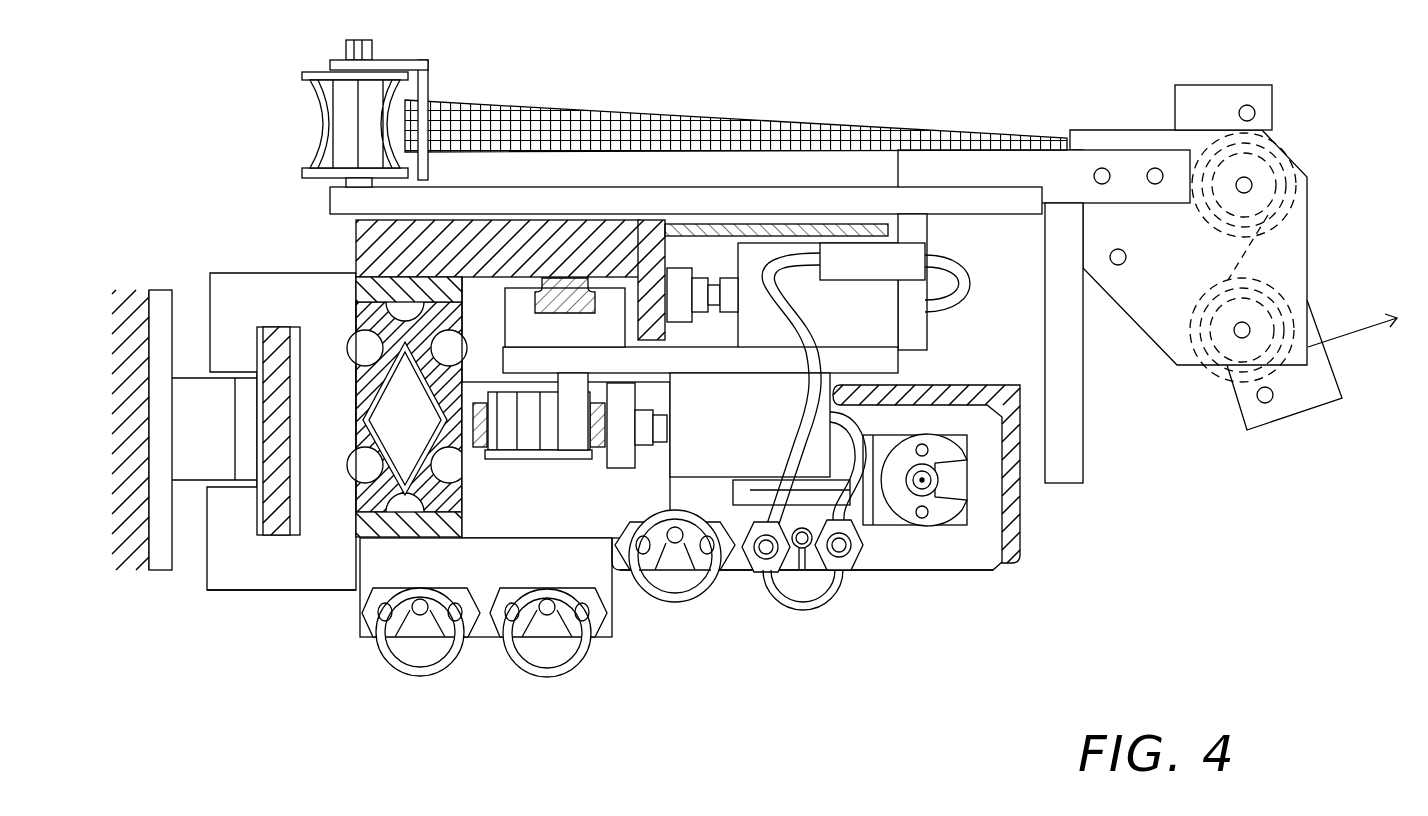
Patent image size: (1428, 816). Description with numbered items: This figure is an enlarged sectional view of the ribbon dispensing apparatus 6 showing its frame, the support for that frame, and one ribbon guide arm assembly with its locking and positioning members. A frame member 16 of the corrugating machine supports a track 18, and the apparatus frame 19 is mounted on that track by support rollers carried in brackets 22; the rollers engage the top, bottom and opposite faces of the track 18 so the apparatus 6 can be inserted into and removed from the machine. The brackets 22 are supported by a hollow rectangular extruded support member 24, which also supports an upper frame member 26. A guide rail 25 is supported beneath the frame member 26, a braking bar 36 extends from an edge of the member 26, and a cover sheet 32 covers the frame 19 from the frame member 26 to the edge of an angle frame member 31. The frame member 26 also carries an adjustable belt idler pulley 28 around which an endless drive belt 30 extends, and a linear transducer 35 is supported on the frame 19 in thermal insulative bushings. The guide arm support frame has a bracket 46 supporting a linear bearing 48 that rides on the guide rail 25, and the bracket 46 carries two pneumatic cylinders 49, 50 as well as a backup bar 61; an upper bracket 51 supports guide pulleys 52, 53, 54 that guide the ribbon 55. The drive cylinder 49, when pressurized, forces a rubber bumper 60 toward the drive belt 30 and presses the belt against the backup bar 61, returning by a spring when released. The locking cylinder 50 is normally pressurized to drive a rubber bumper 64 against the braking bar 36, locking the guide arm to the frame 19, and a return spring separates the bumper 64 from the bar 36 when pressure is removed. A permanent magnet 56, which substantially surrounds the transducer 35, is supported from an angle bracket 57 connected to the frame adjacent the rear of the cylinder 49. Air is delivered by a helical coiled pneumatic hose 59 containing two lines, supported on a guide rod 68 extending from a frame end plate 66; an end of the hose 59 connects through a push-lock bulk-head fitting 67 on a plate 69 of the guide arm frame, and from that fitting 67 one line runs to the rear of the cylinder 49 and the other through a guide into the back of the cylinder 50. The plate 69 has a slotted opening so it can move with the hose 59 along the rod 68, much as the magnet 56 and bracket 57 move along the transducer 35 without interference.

The apparatus 6 is at (303, 693).
The frame member 16 is at (128, 290).
The track 18 is at (257, 520).
The apparatus frame 19 is at (255, 268).
The bracket 22 is at (320, 590).
The support member 24 is at (376, 407).
The guide rail 25 is at (558, 280).
The upper frame member 26 is at (356, 230).
The belt idler pulley 28 is at (517, 430).
The drive belt 30 is at (473, 417).
The angle frame member 31 is at (1020, 412).
The cover sheet 32 is at (815, 224).
The linear transducer 35 is at (938, 480).
The braking bar 36 is at (672, 242).
The bracket 46 is at (900, 363).
The linear bearing 48 is at (600, 348).
The drive cylinder 49 is at (765, 428).
The locking cylinder 50 is at (872, 326).
The upper bracket 51 is at (698, 188).
The guide pulley 52 is at (327, 100).
The guide pulley 53 is at (1273, 158).
The guide pulley 54 is at (1217, 370).
The ribbon 55 is at (627, 110).
The permanent magnet 56 is at (950, 512).
The angle bracket 57 is at (950, 527).
The helical coiled pneumatic hose 59 is at (820, 610).
The rubber bumper 60 is at (628, 458).
The backup bar 61 is at (562, 430).
The rubber bumper 64 is at (668, 313).
The frame end plate 66 is at (420, 640).
The push-lock bulk-head fitting 67 is at (768, 552).
The guide rod 68 is at (803, 548).
The plate 69 is at (870, 552).